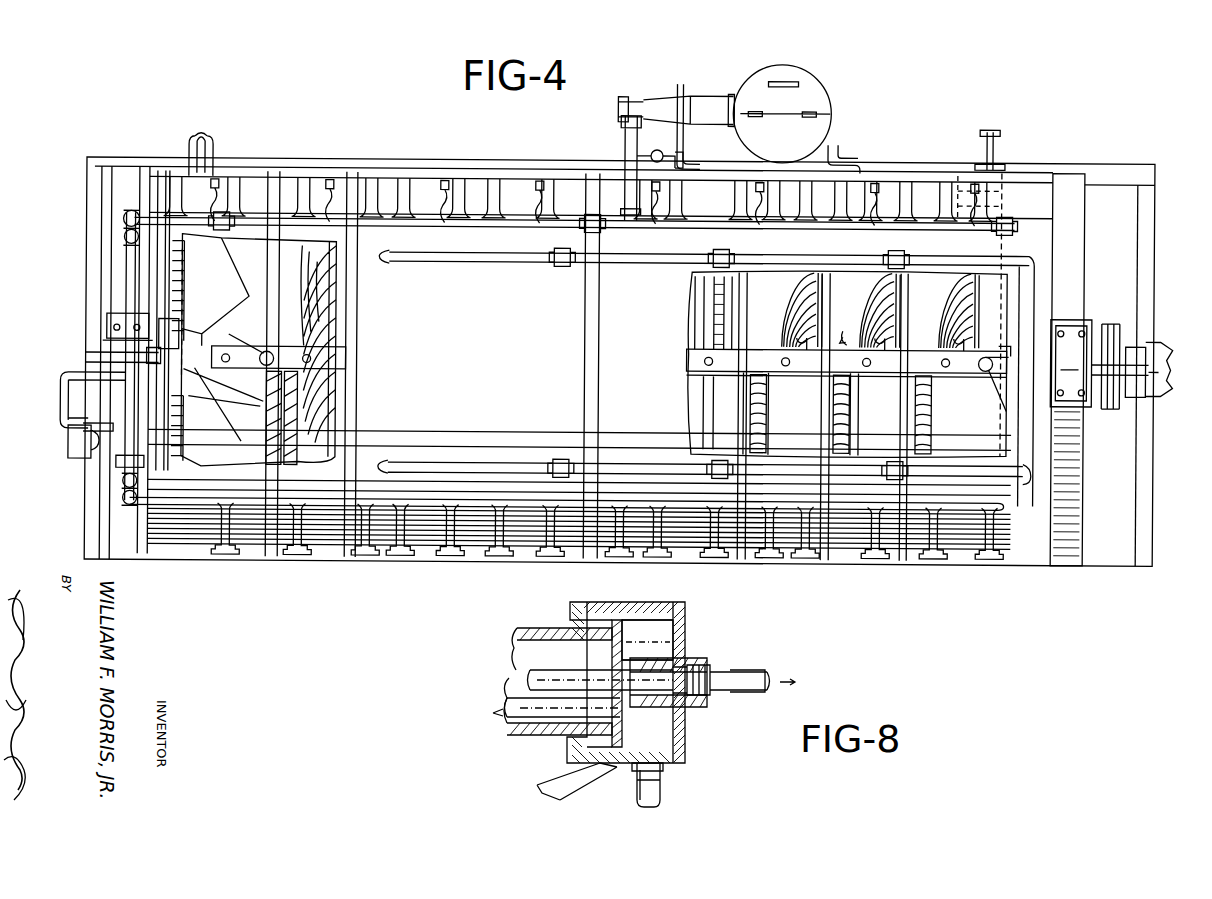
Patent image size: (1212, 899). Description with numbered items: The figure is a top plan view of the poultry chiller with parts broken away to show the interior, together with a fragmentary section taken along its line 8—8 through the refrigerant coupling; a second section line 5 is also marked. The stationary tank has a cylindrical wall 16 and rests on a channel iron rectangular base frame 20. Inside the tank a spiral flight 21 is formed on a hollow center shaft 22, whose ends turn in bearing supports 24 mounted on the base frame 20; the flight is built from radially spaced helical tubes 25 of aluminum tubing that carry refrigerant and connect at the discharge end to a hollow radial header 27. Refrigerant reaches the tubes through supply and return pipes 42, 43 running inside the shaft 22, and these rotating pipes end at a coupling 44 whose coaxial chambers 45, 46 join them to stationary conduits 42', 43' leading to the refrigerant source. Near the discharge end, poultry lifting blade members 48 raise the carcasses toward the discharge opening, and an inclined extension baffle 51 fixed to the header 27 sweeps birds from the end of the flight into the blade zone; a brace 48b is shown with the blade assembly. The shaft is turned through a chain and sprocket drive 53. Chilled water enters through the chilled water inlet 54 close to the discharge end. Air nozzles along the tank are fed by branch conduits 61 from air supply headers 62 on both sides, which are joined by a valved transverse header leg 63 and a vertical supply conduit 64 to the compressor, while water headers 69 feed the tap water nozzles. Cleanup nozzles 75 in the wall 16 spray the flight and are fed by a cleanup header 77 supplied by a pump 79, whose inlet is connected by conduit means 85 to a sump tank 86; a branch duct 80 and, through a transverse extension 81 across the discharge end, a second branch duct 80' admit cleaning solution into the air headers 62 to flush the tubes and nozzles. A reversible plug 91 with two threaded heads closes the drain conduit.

In FIG. 4, the section line 5- 5 is at (30, 345).
In FIG. 4, the section line 8- 8 is at (1123, 325).
In FIG. 4, the cylindrical wall 16 is at (488, 351).
In FIG. 4, the base frame 20 is at (1070, 170).
In FIG. 4, the spiral flight 21 is at (298, 301).
In FIG. 4, the hollow center shaft 22 is at (803, 380).
In FIG. 4, the bearing supports 24 is at (118, 333).
In FIG. 4, the helical tubes 25 is at (895, 407).
In FIG. 4, the radial header 27 is at (291, 340).
In FIG. 8, the supply pipe 42 is at (542, 683).
In FIG. 8, the stationary conduit 42' is at (626, 785).
In FIG. 8, the return pipe 43 is at (575, 669).
In FIG. 8, the stationary conduit 43' is at (734, 665).
In FIG. 4, the coupling 44 is at (1140, 388).
In FIG. 8, the coupling 44 is at (643, 608).
In FIG. 8, the coaxial chamber 45 is at (665, 637).
In FIG. 8, the coaxial chamber 46 is at (687, 662).
In FIG. 4, the poultry lifting blade members 48 is at (225, 282).
In FIG. 4, the hopper brace 48b is at (237, 386).
In FIG. 4, the extension baffle 51 is at (250, 322).
In FIG. 4, the chain and sprocket drive 53 is at (1115, 408).
In FIG. 4, the chilled water inlet 54 is at (198, 140).
In FIG. 4, the branch conduits 61 is at (378, 175).
In FIG. 4, the air supply headers 62 is at (480, 207).
In FIG. 4, the transverse header leg 63 is at (118, 468).
In FIG. 4, the vertical supply conduit 64 is at (79, 435).
In FIG. 4, the water headers 69 is at (642, 275).
In FIG. 4, the cleanup nozzles 75 is at (330, 178).
In FIG. 4, the cleanup header 77 is at (505, 227).
In FIG. 4, the pump 79 is at (612, 151).
In FIG. 4, the branch duct 80 is at (216, 170).
In FIG. 4, the branch duct 80' is at (567, 489).
In FIG. 4, the transverse extension 81 is at (128, 290).
In FIG. 4, the conduit means 85 is at (624, 118).
In FIG. 4, the sump tank 86 is at (822, 120).
In FIG. 4, the reversible plug 91 is at (994, 150).